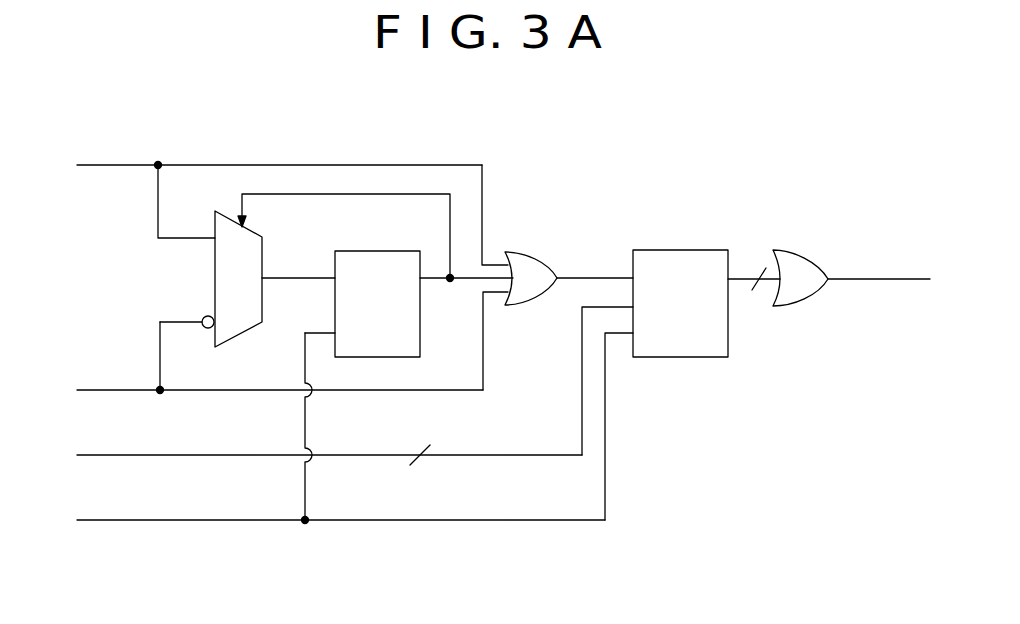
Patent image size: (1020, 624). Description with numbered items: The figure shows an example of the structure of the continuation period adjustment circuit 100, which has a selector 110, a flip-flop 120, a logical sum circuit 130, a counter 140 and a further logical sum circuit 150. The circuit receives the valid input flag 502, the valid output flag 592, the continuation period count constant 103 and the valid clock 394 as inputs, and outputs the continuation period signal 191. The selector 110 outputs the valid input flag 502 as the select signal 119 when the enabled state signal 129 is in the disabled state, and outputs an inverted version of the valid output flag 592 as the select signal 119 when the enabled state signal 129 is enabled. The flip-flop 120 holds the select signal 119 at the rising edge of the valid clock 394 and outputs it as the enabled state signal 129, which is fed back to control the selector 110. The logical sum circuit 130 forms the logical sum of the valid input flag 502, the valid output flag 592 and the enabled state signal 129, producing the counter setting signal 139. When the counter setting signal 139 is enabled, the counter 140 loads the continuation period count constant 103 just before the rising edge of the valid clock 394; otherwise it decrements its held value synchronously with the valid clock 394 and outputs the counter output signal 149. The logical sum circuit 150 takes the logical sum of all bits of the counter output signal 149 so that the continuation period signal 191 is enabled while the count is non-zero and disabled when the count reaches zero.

The continuation period adjustment circuit 100 is at (582, 167).
The selector 110 is at (265, 246).
The select signal 119 is at (300, 278).
The flip-flop 120 is at (378, 251).
The enabled state signal 129 is at (438, 283).
The logical sum circuit 130 is at (527, 257).
The counter setting signal 139 is at (593, 278).
The counter 140 is at (687, 250).
The counter output signal 149 is at (744, 262).
The logical sum circuit 150 is at (805, 252).
The continuation period signal 191 is at (900, 279).
The valid input flag 502 is at (100, 166).
The valid output flag 592 is at (100, 390).
The continuation period count constant 103 is at (265, 455).
The valid clock 394 is at (262, 520).